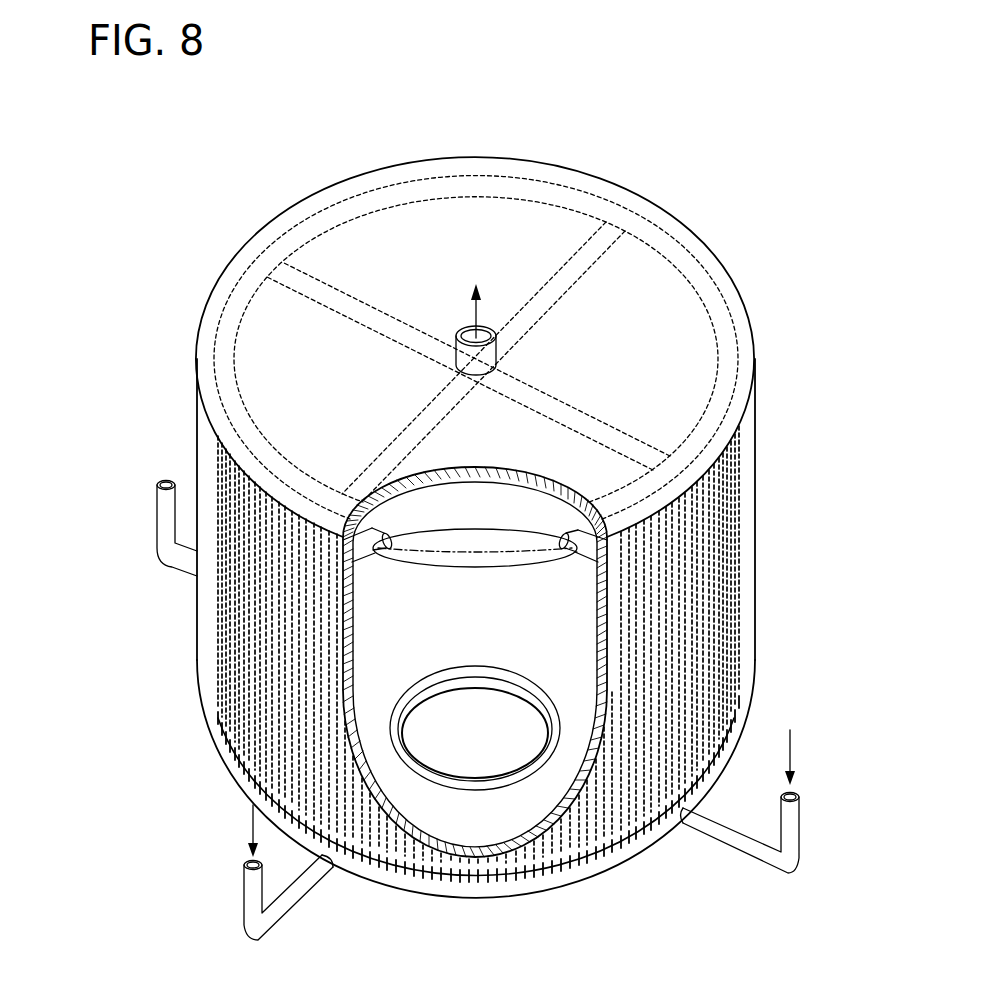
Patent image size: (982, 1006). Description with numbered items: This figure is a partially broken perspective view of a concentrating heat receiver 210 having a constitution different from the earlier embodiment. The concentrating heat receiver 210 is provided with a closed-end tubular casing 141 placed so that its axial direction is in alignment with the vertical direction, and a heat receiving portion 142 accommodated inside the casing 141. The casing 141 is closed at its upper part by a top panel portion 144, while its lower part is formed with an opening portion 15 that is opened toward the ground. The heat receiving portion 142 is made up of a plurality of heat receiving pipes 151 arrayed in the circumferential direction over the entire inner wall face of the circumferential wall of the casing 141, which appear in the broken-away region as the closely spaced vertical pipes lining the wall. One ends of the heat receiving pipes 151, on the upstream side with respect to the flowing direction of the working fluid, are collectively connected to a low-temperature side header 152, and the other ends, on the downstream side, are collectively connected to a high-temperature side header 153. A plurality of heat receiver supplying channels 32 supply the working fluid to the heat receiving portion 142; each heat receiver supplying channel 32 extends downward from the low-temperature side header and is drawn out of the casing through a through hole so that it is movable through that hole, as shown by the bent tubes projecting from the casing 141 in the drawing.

The concentrating heat receiver 210 is at (728, 152).
The top panel portion 144 is at (560, 170).
The casing 141 is at (757, 478).
The heat receiving portion 142 is at (372, 654).
The high-temperature side header 153 is at (292, 500).
The heat receiving pipes 151 is at (278, 672).
The low-temperature side header 152 is at (247, 797).
The opening portion 15 is at (520, 760).
The heat receiver supplying channels 32 is at (157, 518).